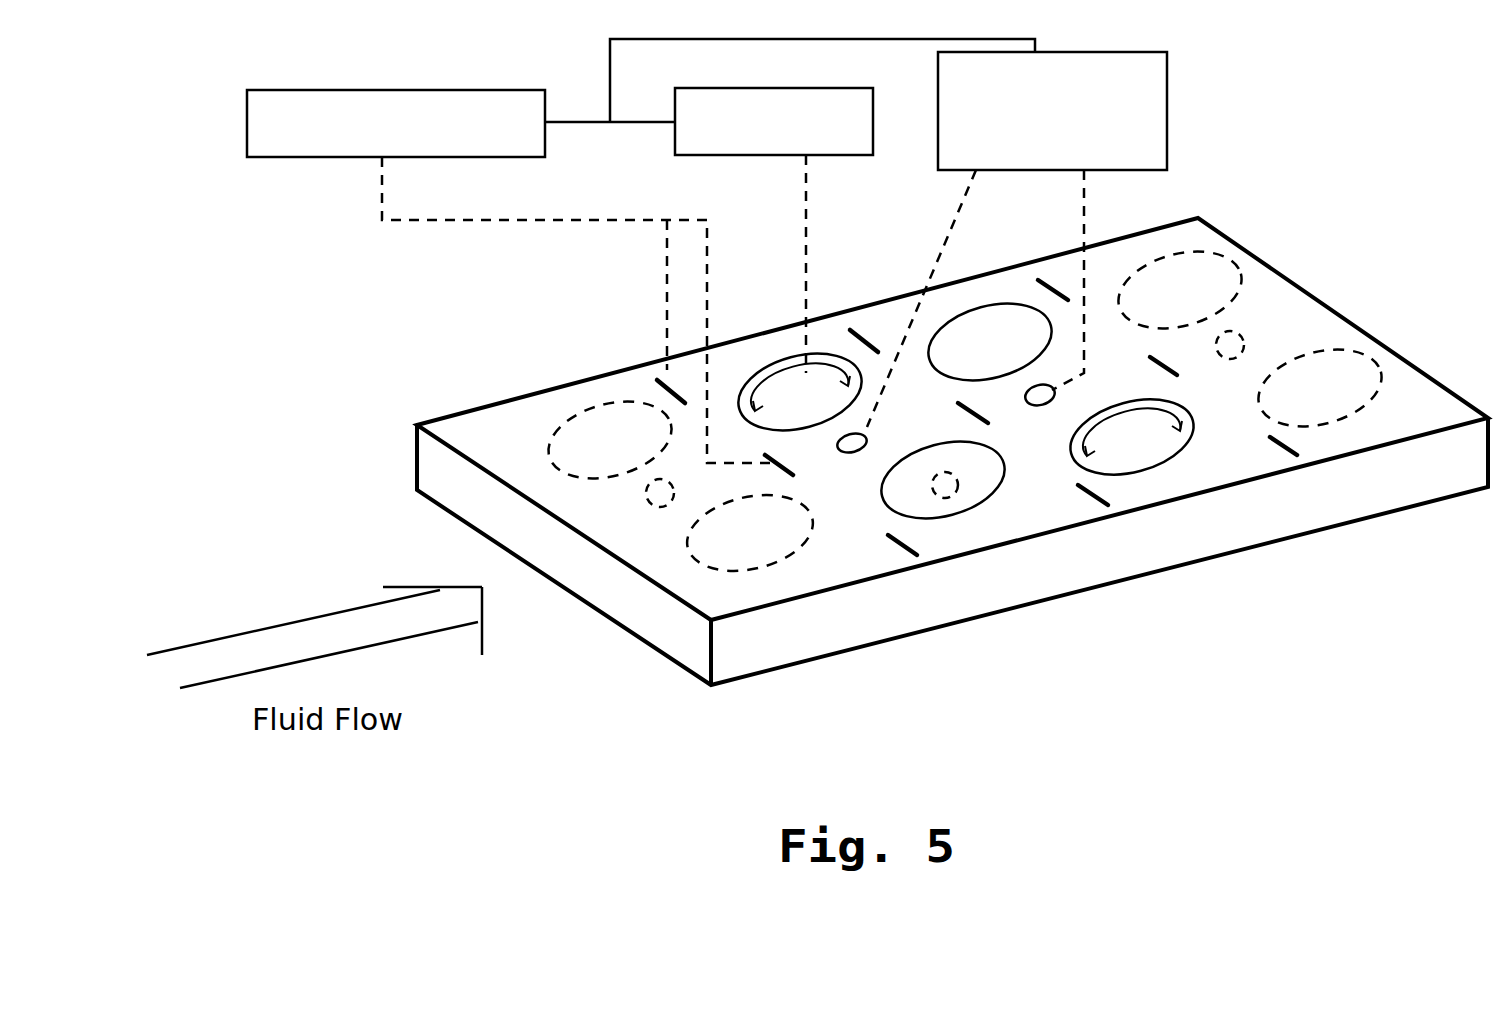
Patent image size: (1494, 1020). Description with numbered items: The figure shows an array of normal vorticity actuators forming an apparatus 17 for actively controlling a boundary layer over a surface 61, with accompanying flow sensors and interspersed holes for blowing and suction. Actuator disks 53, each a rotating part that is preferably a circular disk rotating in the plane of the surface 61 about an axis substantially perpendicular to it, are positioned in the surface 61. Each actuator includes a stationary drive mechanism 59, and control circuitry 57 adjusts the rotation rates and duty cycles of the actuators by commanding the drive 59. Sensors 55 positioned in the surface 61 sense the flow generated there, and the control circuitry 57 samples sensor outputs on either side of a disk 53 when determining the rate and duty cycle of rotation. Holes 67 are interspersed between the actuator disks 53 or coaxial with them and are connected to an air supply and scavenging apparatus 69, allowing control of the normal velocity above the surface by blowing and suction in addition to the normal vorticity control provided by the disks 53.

The apparatus for actively controlling a boundary layer 17 is at (952, 482).
The actuator disk 53 is at (1133, 455).
The sensor 55 is at (1083, 507).
The control circuitry 57 is at (641, 251).
The drive mechanism 59 is at (774, 230).
The surface 61 is at (647, 618).
The hole 67 is at (1040, 405).
The air supply and scavenging apparatus 69 is at (1017, 239).